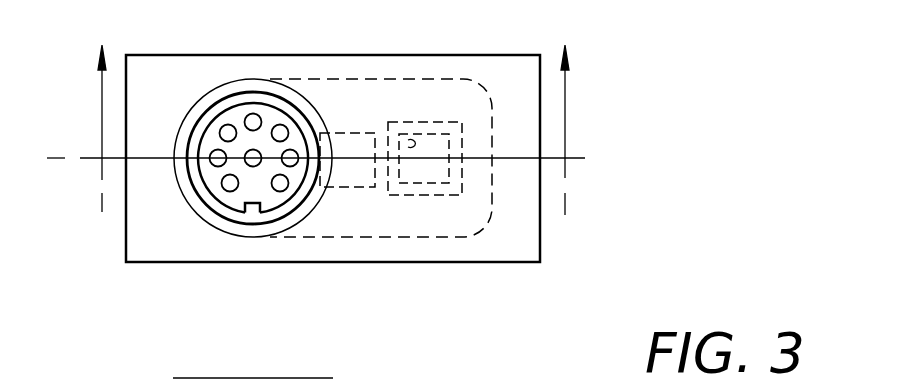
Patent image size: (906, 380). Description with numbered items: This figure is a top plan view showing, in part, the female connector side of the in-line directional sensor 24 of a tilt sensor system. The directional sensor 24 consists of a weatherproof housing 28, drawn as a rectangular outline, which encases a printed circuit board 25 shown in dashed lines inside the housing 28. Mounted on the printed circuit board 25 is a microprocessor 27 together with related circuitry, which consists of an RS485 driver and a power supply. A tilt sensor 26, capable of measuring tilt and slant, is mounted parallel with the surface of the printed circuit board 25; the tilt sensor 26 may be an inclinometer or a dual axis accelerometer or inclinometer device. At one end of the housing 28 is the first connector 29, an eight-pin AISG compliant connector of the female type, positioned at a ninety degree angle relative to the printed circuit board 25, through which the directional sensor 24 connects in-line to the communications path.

The in-line directional sensor 24 is at (567, 253).
The printed circuit board 25 is at (482, 230).
The tilt sensor 26 is at (423, 184).
The microprocessor 27 is at (345, 185).
The weatherproof housing 28 is at (308, 262).
The first connector 29 is at (219, 222).